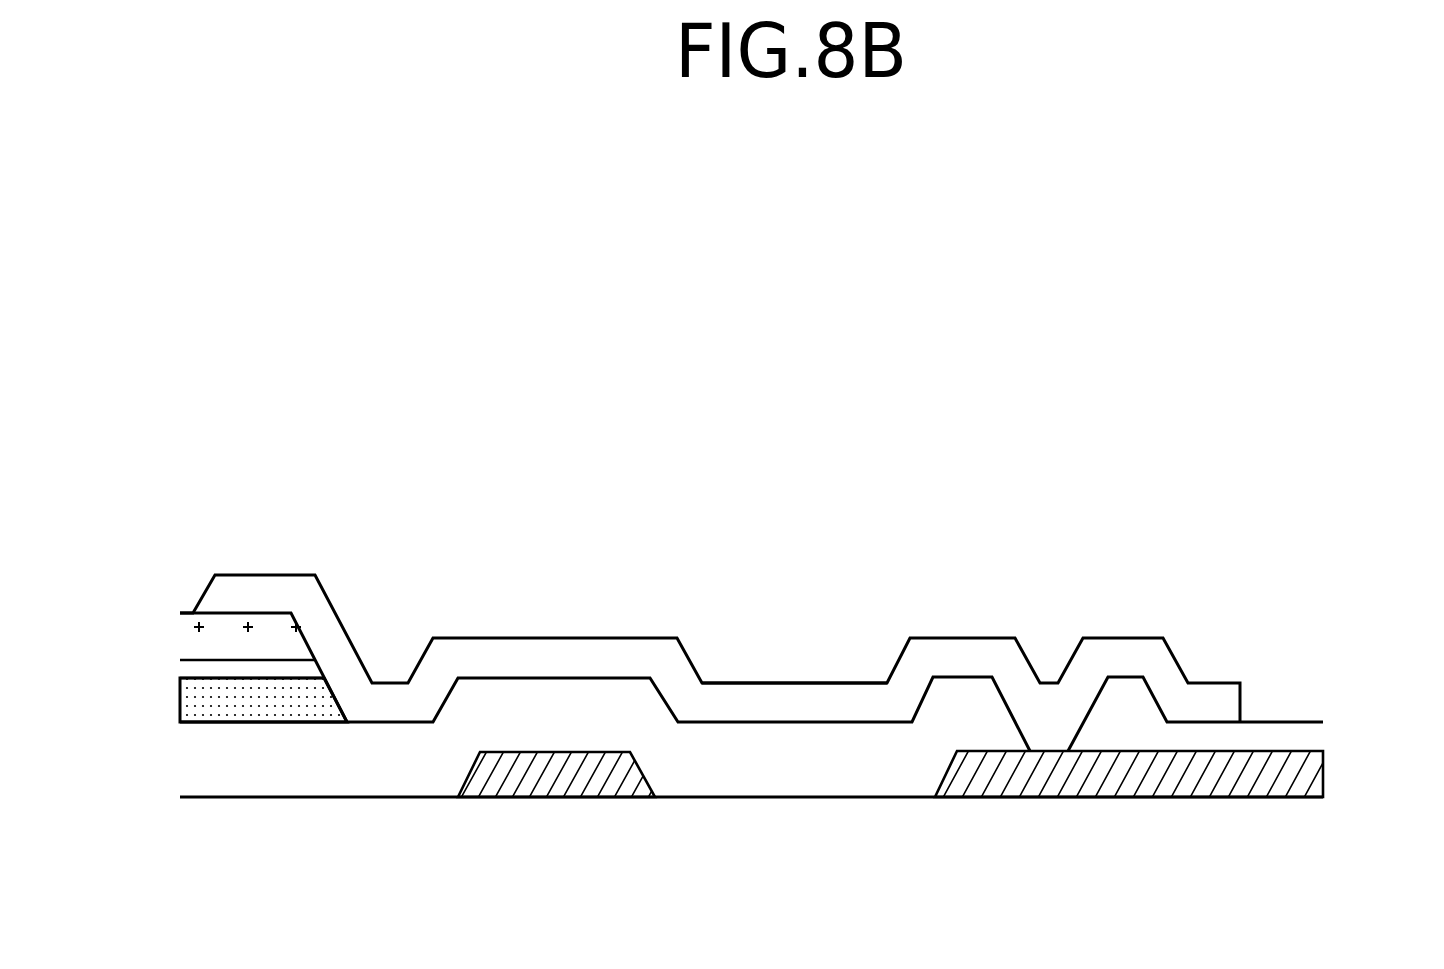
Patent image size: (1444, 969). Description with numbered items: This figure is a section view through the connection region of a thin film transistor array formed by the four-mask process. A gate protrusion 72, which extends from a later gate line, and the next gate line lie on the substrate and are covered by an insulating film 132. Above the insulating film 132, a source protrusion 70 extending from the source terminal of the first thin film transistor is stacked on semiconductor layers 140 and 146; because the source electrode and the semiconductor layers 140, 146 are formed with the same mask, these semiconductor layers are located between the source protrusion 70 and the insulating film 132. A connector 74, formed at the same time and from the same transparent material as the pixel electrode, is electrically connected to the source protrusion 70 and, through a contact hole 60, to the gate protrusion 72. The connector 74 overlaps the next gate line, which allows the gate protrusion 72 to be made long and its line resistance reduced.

The contact hole 60 is at (1052, 637).
The source protrusion 70 is at (182, 627).
The gate protrusion 72 is at (982, 797).
The connector 74 is at (787, 697).
The insulating film 132 is at (1318, 740).
The semiconductor layer 140 is at (182, 710).
The semiconductor layer 146 is at (182, 668).